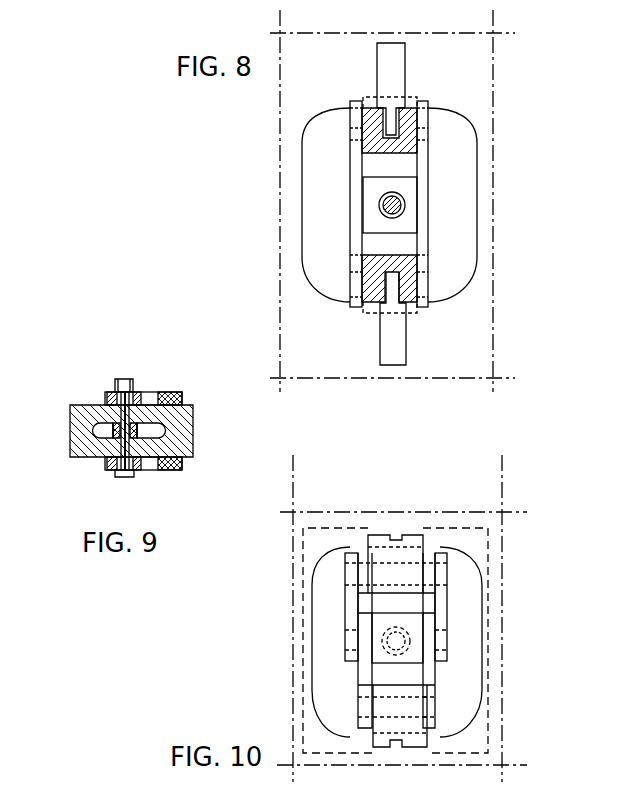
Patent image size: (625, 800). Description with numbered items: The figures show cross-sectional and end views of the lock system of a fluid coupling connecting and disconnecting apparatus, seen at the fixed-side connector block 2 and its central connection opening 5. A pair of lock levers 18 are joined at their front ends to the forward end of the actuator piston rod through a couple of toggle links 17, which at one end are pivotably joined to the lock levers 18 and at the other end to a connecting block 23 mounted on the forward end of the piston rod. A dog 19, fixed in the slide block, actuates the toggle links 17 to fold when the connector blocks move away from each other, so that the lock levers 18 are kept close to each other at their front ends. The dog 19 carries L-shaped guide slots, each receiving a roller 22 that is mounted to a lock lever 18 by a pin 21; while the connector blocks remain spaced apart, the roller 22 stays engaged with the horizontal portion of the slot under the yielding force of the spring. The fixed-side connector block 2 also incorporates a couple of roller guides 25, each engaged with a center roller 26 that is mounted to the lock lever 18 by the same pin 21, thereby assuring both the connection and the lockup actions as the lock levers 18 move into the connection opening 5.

In FIG. 8, the fixed-side connector block 2 is at (471, 67).
In FIG. 10, the fixed-side connector block 2 is at (327, 525).
In FIG. 8, the connection opening 5 is at (309, 236).
In FIG. 10, the connection opening 5 is at (469, 559).
In FIG. 10, the toggle links 17 is at (358, 668).
In FIG. 8, the lock levers 18 is at (417, 147).
In FIG. 9, the lock levers 18 is at (78, 411).
In FIG. 10, the lock levers 18 is at (413, 541).
In FIG. 8, the dog 19 is at (352, 200).
In FIG. 9, the pin 21 is at (126, 478).
In FIG. 9, the roller 22 is at (144, 396).
In FIG. 8, the connecting block 23 is at (373, 180).
In FIG. 10, the connecting block 23 is at (380, 655).
In FIG. 8, the roller guides 25 is at (395, 72).
In FIG. 9, the center roller 26 is at (92, 455).